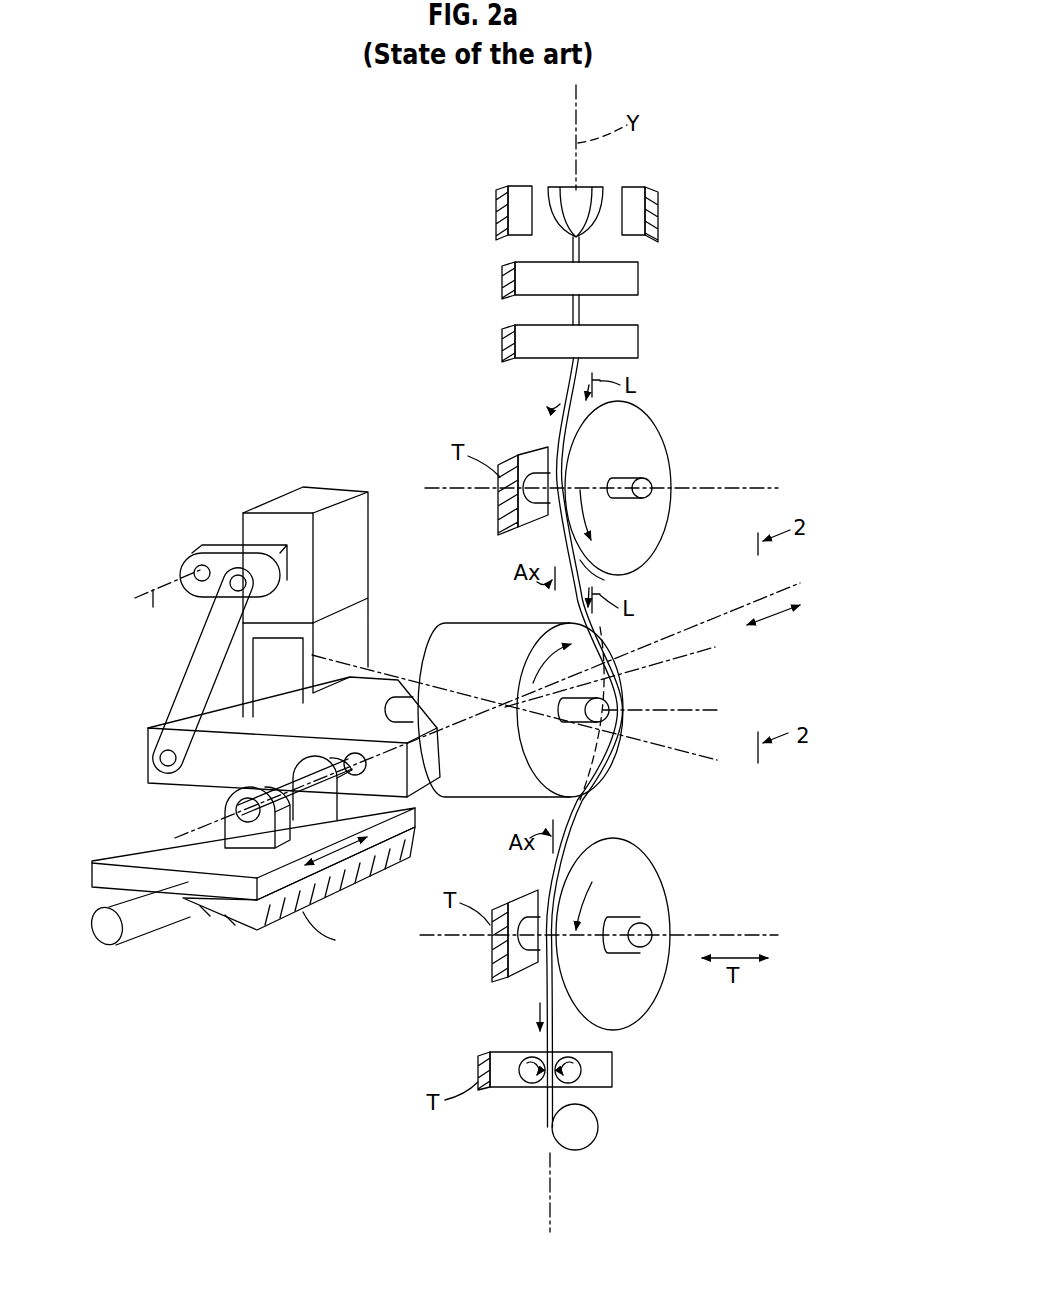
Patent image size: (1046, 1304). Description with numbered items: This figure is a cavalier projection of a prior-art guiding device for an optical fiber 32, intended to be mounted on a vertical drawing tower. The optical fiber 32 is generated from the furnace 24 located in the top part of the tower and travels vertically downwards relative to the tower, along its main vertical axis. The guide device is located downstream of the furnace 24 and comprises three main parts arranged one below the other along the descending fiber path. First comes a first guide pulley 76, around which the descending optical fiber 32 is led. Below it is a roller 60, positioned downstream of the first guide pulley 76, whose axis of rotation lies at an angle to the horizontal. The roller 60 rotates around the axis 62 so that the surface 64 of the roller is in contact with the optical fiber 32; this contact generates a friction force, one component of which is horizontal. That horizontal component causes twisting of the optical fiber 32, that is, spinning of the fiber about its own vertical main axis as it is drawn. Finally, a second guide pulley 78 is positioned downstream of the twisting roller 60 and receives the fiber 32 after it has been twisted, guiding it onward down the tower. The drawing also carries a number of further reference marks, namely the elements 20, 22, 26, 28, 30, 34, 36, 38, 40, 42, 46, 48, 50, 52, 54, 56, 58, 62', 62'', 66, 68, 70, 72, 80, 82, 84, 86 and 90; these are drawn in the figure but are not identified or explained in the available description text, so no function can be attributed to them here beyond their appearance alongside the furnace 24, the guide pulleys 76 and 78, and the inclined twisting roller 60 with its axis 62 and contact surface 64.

The spinning apparatus (state of the art) 20 is at (481, 246).
The spinneret 22 is at (603, 187).
The furnace 24 is at (495, 216).
The roller box 26 is at (620, 1066).
The rollers 28 is at (525, 1082).
The winder bobbin 30 is at (560, 1142).
The optical fiber 32 is at (563, 380).
The spinning zone 34 is at (581, 252).
The intermediate zone 36 is at (581, 310).
The cooler 38 is at (638, 280).
The coater 40 is at (638, 342).
The positioning device 42 is at (338, 461).
The base 46 is at (425, 812).
The rod 48 is at (148, 930).
The carriage 50 is at (205, 778).
The shaft 52 is at (300, 770).
The bearing 54 is at (228, 840).
The translation axis 56 is at (728, 608).
The contact point 58 is at (620, 668).
The roller 60 is at (488, 795).
The axis 62 is at (678, 697).
The tilted roller axis position 62' is at (631, 677).
The tilted roller axis position 62'' is at (514, 727).
The surface of the roller 64 is at (478, 627).
The crank 66 is at (210, 547).
The motor 68 is at (277, 495).
The motor axis 70 is at (153, 610).
The connecting rod 72 is at (175, 692).
The first guide pulley 76 is at (667, 418).
The second guide pulley 78 is at (669, 1016).
The upper roller axis 80 is at (756, 484).
The lower roller axis 82 is at (707, 933).
The upper contact point 84 is at (602, 578).
The lower contact point 86 is at (583, 845).
The roller drive region 90 is at (531, 608).